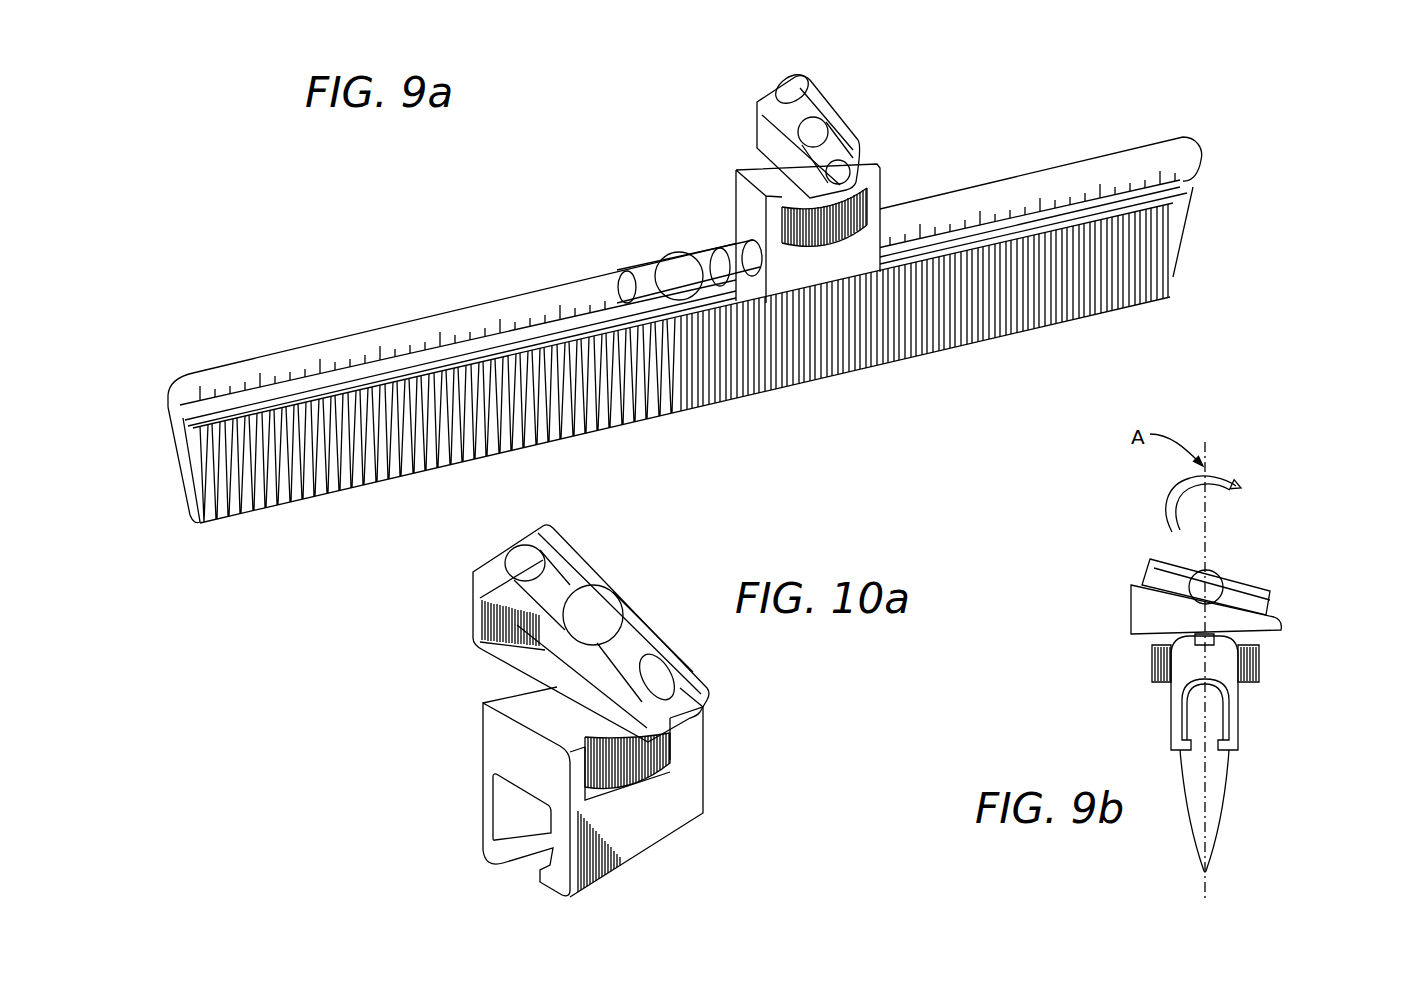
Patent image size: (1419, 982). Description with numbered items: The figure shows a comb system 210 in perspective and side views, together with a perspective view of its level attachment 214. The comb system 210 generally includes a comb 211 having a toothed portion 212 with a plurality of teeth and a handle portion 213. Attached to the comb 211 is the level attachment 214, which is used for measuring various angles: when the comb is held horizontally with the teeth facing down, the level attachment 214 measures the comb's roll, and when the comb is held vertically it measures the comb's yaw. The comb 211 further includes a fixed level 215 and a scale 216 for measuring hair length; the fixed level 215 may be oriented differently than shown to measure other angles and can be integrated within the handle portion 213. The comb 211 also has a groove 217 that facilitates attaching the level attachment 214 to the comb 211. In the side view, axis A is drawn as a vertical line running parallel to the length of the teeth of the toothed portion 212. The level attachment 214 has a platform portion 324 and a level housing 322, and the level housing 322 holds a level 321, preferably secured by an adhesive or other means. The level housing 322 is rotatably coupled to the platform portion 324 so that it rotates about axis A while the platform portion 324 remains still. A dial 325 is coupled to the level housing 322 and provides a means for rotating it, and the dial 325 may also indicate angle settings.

In FIG. 9A, the comb system 210 is at (299, 211).
In FIG. 9B, the comb system 210 is at (1308, 537).
In FIG. 9A, the comb 211 is at (1187, 128).
In FIG. 9B, the comb 211 is at (1228, 806).
In FIG. 9A, the toothed portion 212 is at (812, 381).
In FIG. 9A, the handle portion 213 is at (327, 338).
In FIG. 9A, the level attachment 214 is at (838, 124).
In FIG. 9B, the level attachment 214 is at (1126, 624).
In FIG. 10A, the level attachment 214 is at (648, 550).
In FIG. 9A, the fixed level 215 is at (677, 268).
In FIG. 9A, the scale 216 is at (512, 330).
In FIG. 9A, the groove 217 is at (186, 426).
In FIG. 10A, the level 321 is at (553, 594).
In FIG. 10A, the level housing 322 is at (483, 603).
In FIG. 10A, the platform portion 324 is at (641, 843).
In FIG. 10A, the dial 325 is at (658, 758).